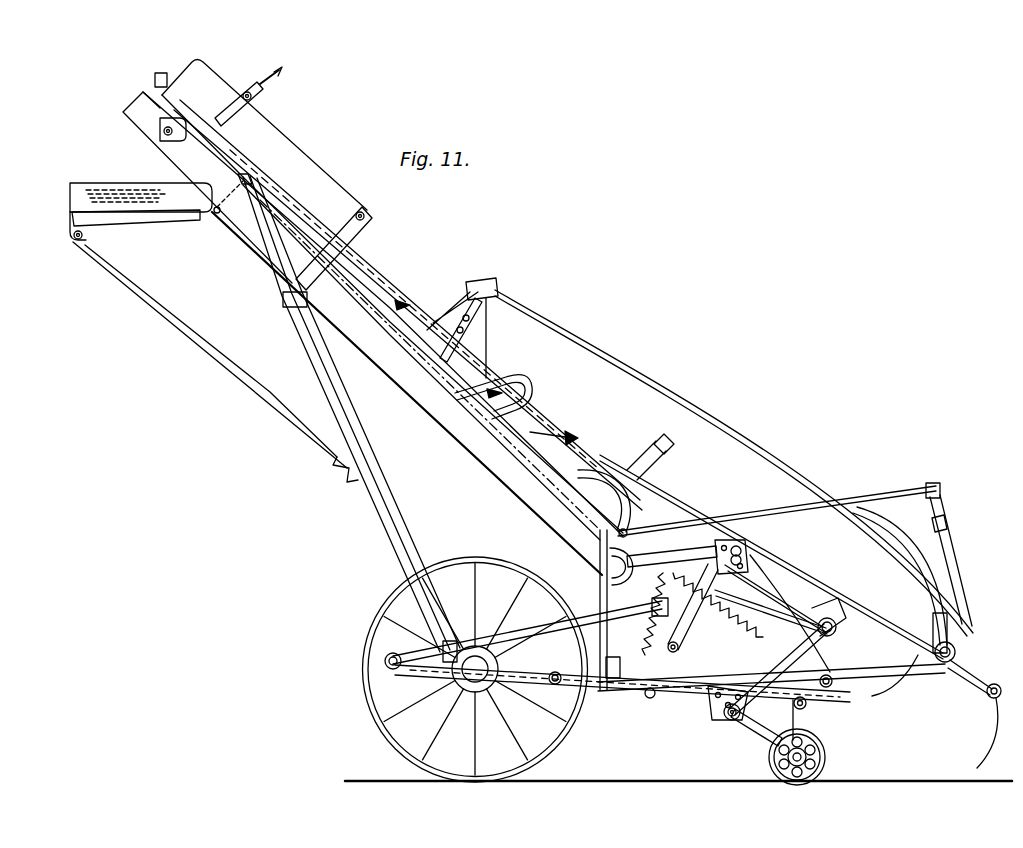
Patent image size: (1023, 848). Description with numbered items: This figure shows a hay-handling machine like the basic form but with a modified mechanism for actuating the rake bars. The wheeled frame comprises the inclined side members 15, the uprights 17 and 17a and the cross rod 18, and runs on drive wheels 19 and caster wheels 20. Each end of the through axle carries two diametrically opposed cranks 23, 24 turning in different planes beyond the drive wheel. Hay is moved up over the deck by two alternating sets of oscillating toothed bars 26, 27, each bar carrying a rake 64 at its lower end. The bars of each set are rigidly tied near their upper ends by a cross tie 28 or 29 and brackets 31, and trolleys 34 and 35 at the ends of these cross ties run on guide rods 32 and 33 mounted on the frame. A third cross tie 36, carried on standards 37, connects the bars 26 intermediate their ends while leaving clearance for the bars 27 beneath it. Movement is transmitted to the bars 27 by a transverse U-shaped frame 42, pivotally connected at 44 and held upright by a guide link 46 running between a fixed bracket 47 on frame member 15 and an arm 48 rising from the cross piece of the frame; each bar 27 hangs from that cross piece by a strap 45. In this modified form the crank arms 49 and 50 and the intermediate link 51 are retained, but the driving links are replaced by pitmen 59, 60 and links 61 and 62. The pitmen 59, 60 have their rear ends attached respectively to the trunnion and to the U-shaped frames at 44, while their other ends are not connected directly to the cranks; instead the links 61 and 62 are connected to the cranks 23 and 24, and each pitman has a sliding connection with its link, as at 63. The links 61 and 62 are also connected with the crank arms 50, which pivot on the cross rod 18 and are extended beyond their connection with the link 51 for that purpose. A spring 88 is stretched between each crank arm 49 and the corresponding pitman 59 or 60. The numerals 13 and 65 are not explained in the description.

The upper frame rail 13 is at (613, 360).
The inclined side member 15 is at (500, 468).
The upright 17 is at (380, 460).
The upright 17a is at (600, 570).
The cross rod 18 is at (731, 720).
The drive wheel 19 is at (366, 668).
The caster wheel 20 is at (828, 761).
The crank 23 is at (395, 670).
The crank 24 is at (557, 684).
The oscillating toothed bar 26 is at (548, 445).
The oscillating toothed bar 27 is at (682, 506).
The cross tie 28 is at (283, 73).
The cross tie 29 is at (480, 279).
The bracket 31 is at (468, 287).
The guide rod 32 is at (262, 119).
The guide rod 33 is at (533, 390).
The trolley 34 is at (258, 97).
The trolley 35 is at (483, 337).
The third cross tie 36 is at (676, 447).
The standard 37 is at (629, 498).
The U-shaped frame 42 is at (946, 542).
The pivotal connection 44 is at (957, 652).
The strap 45 is at (940, 565).
The guide link 46 is at (781, 512).
The fixed bracket 47 is at (598, 560).
The arm 48 is at (941, 493).
The crank arm 49 is at (705, 553).
The crank arm 50 is at (801, 651).
The intermediate link 51 is at (705, 590).
The pitman 59 is at (709, 698).
The pitman 60 is at (862, 674).
The link 61 is at (548, 630).
The link 62 is at (655, 699).
The sliding connection 63 is at (447, 646).
The rake 64 is at (800, 718).
The roller 65 is at (986, 697).
The spring 88 is at (768, 617).